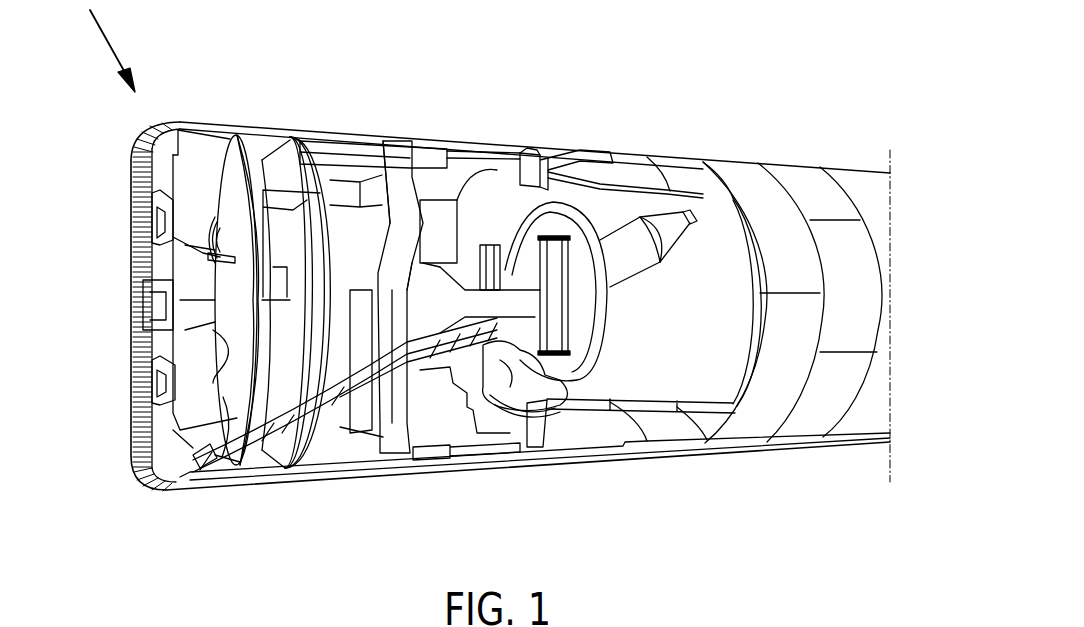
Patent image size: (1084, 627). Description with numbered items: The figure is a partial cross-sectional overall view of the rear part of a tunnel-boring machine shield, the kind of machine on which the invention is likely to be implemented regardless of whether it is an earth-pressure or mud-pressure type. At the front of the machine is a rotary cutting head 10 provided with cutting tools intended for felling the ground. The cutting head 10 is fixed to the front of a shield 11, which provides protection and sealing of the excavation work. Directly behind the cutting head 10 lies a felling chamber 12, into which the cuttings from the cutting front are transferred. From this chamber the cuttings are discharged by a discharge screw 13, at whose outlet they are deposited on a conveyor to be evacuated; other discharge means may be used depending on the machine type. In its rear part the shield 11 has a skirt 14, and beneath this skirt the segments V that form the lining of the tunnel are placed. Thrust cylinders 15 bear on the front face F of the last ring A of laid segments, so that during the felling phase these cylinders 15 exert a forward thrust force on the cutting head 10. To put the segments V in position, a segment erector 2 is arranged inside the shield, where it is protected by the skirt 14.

The segment erector 2 is at (543, 403).
The rotary cutting head 10 is at (160, 303).
The shield 11 is at (408, 142).
The felling chamber 12 is at (188, 448).
The discharge screw 13 is at (423, 373).
The skirt 14 is at (588, 148).
The thrust cylinders 15 is at (341, 153).
The front face F is at (525, 189).
The segments V is at (817, 193).
The last ring A is at (810, 462).